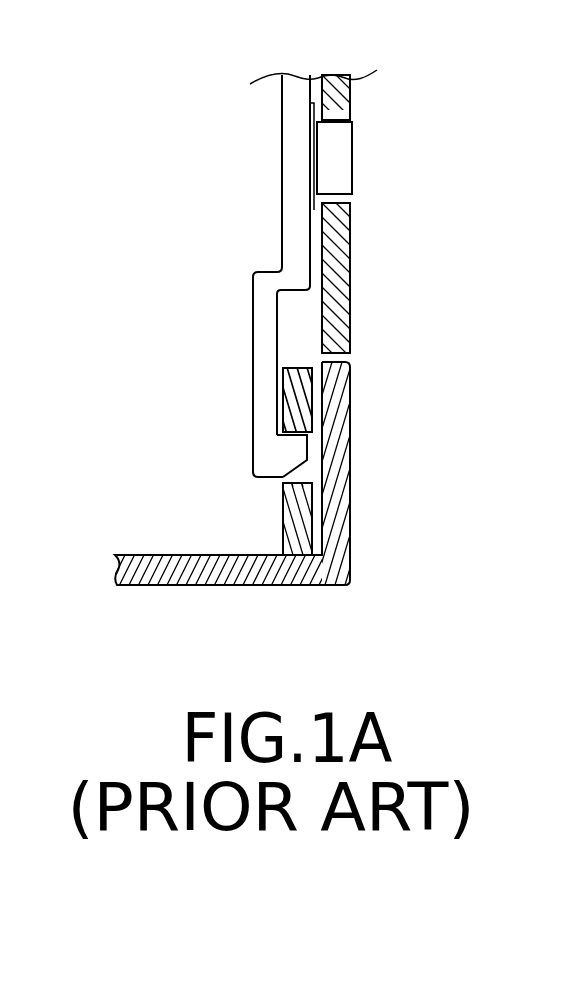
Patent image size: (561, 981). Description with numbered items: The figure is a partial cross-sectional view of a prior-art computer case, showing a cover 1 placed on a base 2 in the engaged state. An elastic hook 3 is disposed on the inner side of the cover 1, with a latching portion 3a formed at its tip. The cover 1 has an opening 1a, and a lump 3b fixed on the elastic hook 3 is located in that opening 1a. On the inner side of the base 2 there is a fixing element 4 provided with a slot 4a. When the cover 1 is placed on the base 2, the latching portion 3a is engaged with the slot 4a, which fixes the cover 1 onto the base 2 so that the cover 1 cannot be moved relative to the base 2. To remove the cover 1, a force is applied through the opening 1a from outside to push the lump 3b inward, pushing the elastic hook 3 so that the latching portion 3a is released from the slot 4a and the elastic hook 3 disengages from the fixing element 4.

The cover 1 is at (348, 287).
The opening 1a is at (352, 197).
The base 2 is at (340, 565).
The elastic hook 3 is at (283, 214).
The latching portion 3a is at (298, 448).
The lump 3b is at (340, 153).
The fixing element 4 is at (293, 531).
The slot 4a is at (302, 473).